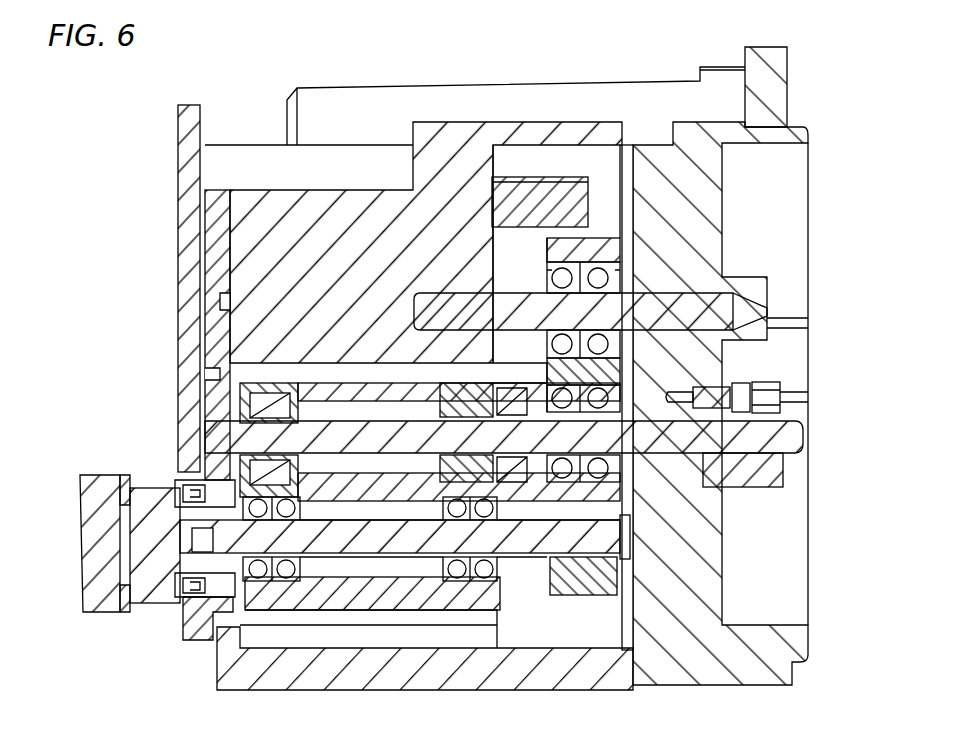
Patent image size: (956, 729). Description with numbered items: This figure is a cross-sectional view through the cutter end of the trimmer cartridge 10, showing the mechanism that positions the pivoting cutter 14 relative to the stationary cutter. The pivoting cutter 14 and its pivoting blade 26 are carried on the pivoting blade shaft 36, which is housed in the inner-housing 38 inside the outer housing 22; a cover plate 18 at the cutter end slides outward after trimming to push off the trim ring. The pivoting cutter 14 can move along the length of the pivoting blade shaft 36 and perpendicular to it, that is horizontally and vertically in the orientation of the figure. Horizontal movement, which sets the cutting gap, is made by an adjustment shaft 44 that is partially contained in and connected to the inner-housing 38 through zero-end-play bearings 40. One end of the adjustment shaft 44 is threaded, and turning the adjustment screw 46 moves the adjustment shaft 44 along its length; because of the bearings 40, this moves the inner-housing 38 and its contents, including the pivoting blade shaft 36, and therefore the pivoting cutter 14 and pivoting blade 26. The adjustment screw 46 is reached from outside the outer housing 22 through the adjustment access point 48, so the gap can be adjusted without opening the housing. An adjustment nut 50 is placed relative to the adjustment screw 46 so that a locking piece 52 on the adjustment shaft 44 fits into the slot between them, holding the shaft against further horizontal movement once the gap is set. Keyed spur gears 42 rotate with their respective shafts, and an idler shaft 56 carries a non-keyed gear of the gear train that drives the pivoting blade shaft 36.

The trimmer cartridge 10 is at (262, 68).
The pivoting cutter 14 is at (64, 512).
The cover plate 18 is at (183, 143).
The outer housing 22 is at (800, 127).
The pivoting blade 26 is at (145, 470).
The pivoting blade shaft 36 is at (252, 552).
The inner-housing 38 is at (488, 596).
The zero-end-play bearings 40 is at (283, 557).
The keyed spur gears 42 is at (572, 588).
The adjustment shaft 44 is at (652, 440).
The adjustment screw 46 is at (735, 382).
The adjustment access point 48 is at (805, 398).
The adjustment nut 50 is at (780, 392).
The locking piece 52 is at (760, 487).
The idler shaft 56 is at (536, 300).